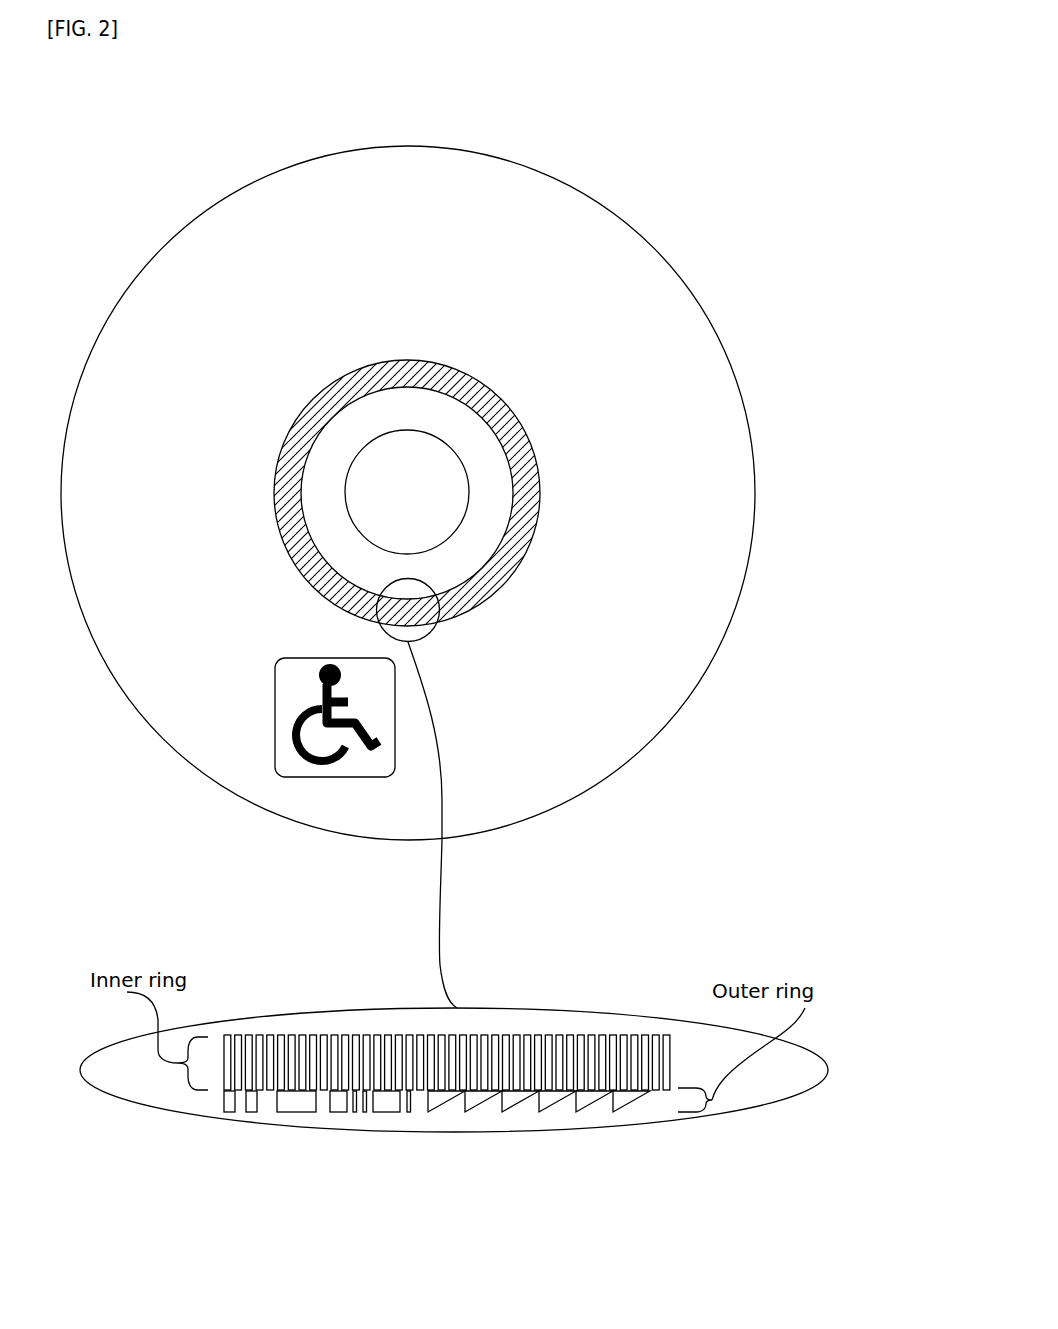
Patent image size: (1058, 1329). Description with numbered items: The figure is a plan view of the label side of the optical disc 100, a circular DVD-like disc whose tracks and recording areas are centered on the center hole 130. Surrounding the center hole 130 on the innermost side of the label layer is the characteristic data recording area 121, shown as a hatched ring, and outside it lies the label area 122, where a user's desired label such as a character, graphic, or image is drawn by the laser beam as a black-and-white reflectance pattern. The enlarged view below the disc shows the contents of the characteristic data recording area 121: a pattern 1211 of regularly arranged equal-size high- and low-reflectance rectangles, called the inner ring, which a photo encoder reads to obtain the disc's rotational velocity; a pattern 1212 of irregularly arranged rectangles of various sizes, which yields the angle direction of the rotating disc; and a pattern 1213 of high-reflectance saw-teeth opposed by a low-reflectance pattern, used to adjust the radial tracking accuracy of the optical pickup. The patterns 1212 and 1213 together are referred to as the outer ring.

The optical disc 100 is at (575, 185).
The center hole 130 is at (345, 470).
The characteristic data recording area 121 is at (523, 432).
The label area 122 is at (667, 467).
The pattern 1211 is at (555, 1036).
The pattern 1212 is at (304, 1112).
The pattern 1213 is at (579, 1112).